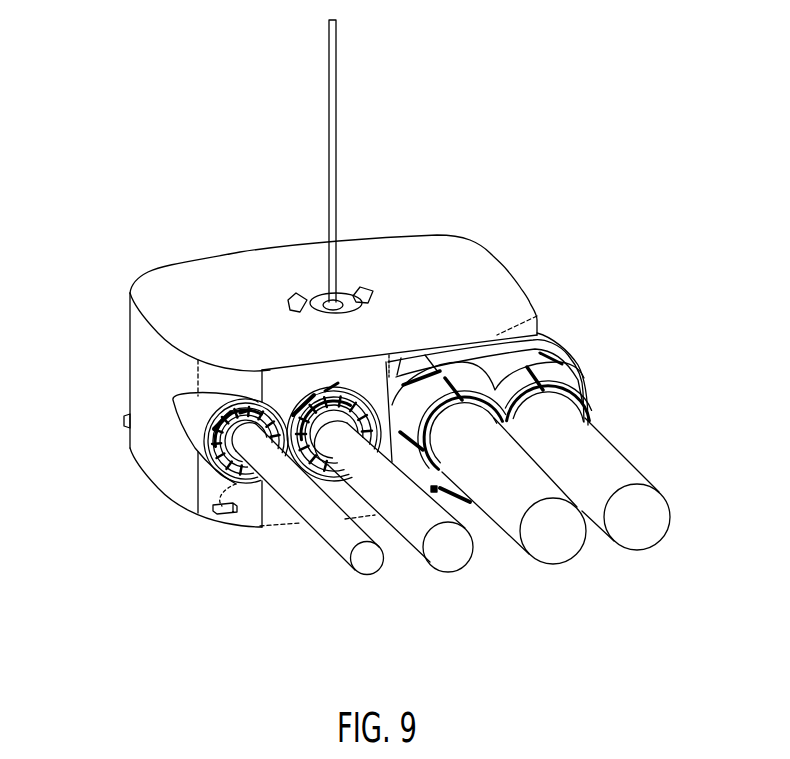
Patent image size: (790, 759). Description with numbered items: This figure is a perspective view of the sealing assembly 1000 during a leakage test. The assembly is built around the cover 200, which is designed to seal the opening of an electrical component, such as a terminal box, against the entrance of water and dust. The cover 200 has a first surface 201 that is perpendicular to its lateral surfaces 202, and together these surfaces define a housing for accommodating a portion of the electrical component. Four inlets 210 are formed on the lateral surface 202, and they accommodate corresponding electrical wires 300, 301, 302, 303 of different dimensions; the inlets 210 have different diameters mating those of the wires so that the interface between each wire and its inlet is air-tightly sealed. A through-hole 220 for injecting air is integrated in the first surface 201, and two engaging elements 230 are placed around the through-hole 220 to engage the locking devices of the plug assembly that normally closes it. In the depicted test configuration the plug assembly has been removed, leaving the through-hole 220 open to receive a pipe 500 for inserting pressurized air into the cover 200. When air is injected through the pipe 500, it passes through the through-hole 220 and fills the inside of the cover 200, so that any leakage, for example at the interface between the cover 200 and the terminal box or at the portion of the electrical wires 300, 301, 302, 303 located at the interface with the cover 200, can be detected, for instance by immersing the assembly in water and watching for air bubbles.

The sealing assembly 1000 is at (371, 333).
The cover 200 is at (324, 377).
The first surface 201 is at (194, 292).
The lateral surface 202 is at (149, 377).
The inlet 210 is at (225, 514).
The through-hole 220 is at (342, 292).
The engaging element 230 is at (373, 291).
The pipe 500 is at (340, 100).
The electrical wire 300 is at (368, 560).
The electrical wire 301 is at (448, 552).
The electrical wire 302 is at (553, 533).
The electrical wire 303 is at (635, 520).